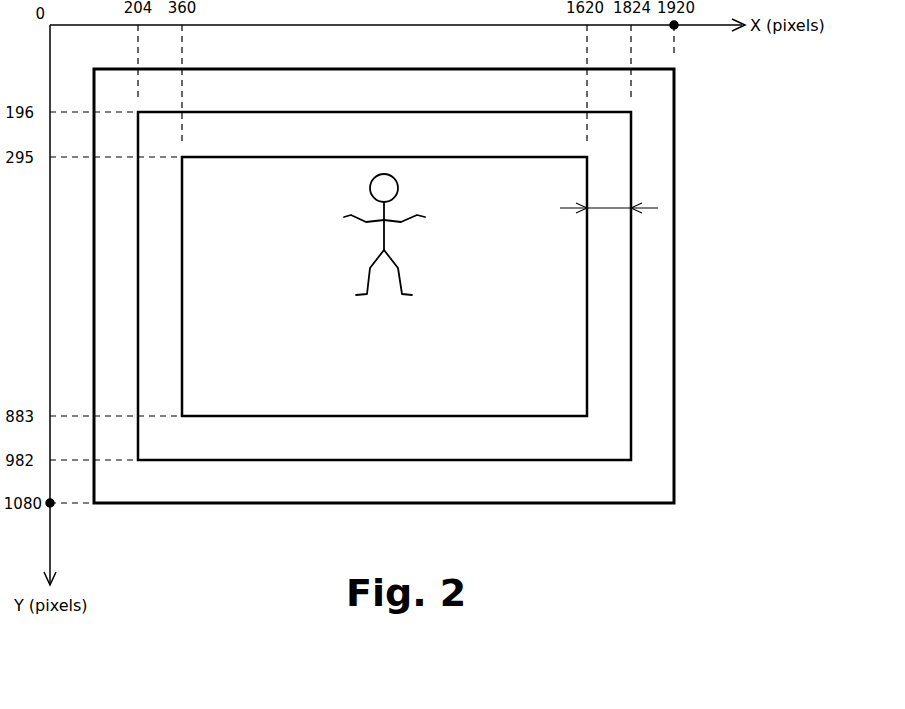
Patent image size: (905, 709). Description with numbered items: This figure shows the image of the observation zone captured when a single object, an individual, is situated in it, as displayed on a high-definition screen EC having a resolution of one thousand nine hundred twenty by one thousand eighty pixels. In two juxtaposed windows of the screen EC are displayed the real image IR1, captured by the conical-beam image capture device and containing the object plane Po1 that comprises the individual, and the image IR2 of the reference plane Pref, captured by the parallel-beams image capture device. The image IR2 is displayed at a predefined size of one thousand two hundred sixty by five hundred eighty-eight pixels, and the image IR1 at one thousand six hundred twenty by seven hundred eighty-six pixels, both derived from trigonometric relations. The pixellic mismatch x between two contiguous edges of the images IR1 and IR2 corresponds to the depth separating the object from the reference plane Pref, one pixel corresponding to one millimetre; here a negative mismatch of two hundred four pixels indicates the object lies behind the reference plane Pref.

The high-definition screen EC is at (675, 357).
The real image IR1 is at (632, 134).
The image of the reference plane IR2 is at (588, 296).
The reference plane Pref is at (578, 248).
The object plane Po1 is at (634, 415).
The offset distance x is at (609, 206).